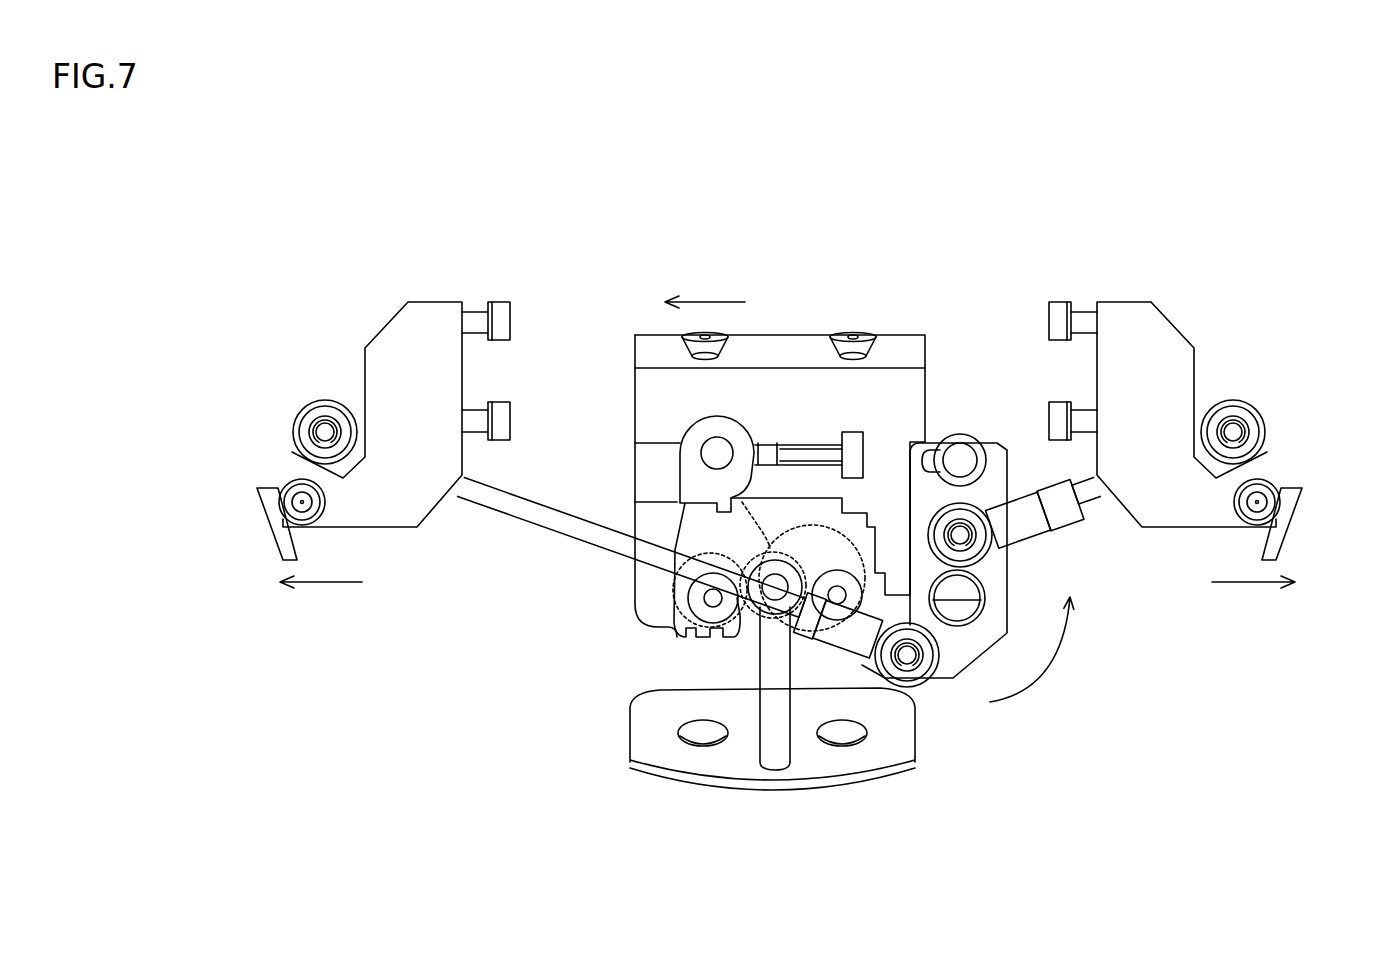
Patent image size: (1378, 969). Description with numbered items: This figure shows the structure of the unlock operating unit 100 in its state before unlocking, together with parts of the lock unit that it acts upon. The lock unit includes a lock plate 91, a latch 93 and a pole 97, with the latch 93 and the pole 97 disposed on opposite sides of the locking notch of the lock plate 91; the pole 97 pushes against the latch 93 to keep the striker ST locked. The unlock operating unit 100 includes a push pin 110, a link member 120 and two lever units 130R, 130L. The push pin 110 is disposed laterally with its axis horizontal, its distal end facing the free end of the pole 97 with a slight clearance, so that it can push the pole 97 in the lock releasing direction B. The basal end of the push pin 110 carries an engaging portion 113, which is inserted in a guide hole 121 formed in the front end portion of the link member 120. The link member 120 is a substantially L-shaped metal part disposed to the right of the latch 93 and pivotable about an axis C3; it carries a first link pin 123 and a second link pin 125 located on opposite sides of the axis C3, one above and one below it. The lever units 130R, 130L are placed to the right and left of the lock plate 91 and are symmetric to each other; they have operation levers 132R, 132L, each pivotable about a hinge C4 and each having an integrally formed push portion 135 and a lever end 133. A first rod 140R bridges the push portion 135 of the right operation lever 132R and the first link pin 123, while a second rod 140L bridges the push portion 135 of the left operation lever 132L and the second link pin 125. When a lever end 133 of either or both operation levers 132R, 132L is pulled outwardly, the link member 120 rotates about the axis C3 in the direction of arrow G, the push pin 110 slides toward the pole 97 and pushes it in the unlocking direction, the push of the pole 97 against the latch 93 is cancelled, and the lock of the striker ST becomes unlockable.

The unlock operating unit 100 is at (480, 275).
The lock plate 91 is at (888, 380).
The latch 93 is at (803, 538).
The pole 97 is at (688, 473).
The push pin 110 is at (875, 440).
The engaging portion 113 is at (965, 458).
The link member 120 is at (942, 693).
The guide hole 121 is at (950, 455).
The first link pin 123 is at (985, 548).
The second link pin 125 is at (907, 682).
The left lever unit 130L is at (376, 296).
The right lever unit 130R is at (1197, 306).
The left operation lever 132L is at (278, 517).
The right operation lever 132R is at (1288, 493).
The lever end 133 is at (284, 549).
The push portion 135 is at (308, 412).
The second rod 140L is at (543, 515).
The first rod 140R is at (1088, 480).
The striker ST is at (767, 707).
The lock releasing direction B is at (705, 291).
The rotation direction of link member G is at (1032, 649).
The axis C3 is at (960, 600).
The hinge C4 is at (298, 500).